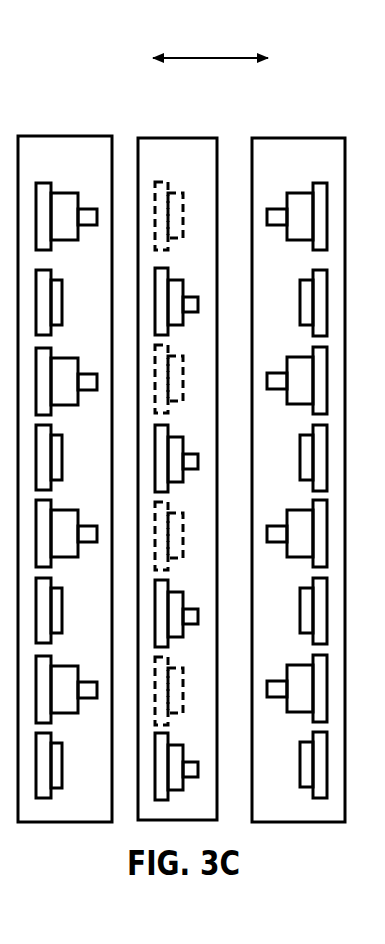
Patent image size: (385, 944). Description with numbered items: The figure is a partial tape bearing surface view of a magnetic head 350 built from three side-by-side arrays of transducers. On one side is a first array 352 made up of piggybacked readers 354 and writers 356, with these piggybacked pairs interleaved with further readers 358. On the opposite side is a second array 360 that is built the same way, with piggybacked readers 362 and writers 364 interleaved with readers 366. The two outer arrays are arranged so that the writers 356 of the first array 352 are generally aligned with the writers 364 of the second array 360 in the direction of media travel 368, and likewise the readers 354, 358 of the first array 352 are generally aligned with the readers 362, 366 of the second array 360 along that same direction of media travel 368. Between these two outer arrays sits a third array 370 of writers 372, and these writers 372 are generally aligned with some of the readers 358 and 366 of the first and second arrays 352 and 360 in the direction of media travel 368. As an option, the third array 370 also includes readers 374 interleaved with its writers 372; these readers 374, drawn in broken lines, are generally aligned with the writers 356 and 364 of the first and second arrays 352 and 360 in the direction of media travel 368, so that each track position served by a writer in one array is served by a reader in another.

The magnetic head 350 is at (76, 69).
The first array 352 is at (50, 128).
The piggybacked reader 354 is at (61, 178).
The writer 356 is at (86, 241).
The reader 358 is at (76, 307).
The second array 360 is at (288, 128).
The piggybacked reader 362 is at (305, 249).
The writer 364 is at (285, 179).
The reader 366 is at (284, 306).
The direction of media travel 368 is at (210, 44).
The third array 370 is at (178, 128).
The writer 372 is at (192, 287).
The reader 374 is at (205, 178).